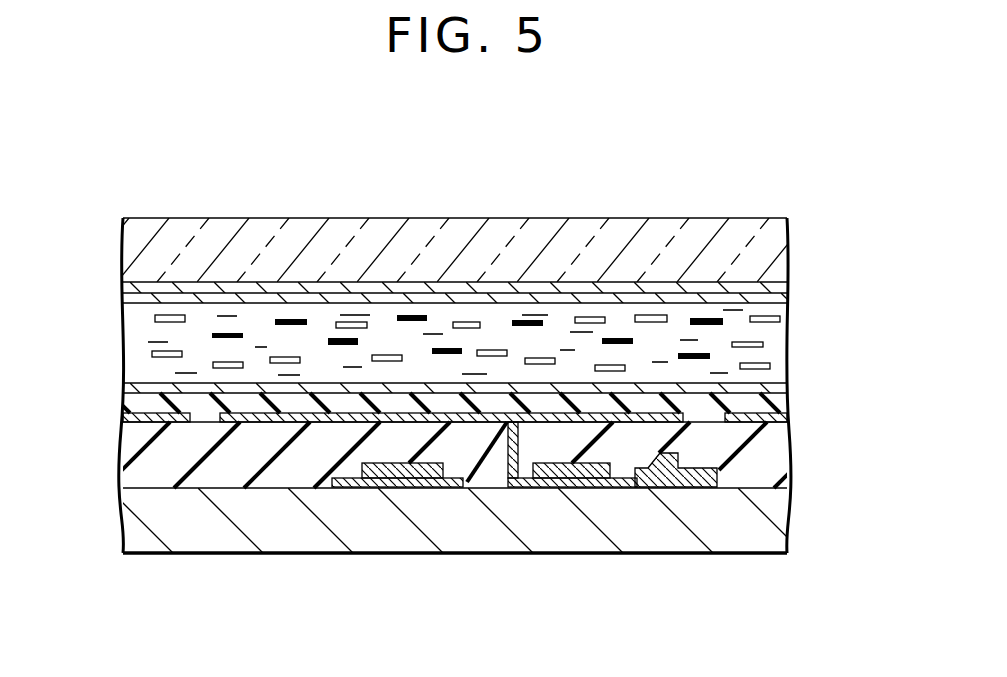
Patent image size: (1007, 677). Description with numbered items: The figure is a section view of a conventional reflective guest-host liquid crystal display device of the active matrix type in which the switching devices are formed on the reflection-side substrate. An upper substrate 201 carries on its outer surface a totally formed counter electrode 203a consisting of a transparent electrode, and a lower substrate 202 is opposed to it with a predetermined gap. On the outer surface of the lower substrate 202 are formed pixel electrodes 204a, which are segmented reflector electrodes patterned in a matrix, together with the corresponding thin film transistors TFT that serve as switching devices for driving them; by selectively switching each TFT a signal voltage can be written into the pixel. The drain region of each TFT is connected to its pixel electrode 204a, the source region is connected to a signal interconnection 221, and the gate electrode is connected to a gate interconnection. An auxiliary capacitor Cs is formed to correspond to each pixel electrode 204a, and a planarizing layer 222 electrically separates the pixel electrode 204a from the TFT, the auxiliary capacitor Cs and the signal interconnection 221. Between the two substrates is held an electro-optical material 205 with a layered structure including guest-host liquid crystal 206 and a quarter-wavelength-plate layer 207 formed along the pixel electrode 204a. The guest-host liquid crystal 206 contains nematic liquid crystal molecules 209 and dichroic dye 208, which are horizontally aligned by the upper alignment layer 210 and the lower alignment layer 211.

The upper substrate 201 is at (743, 250).
The counter electrode 203a is at (782, 288).
The upper alignment layer 210 is at (782, 297).
The electro-optical material 205 is at (461, 280).
The guest-host liquid crystal 206 is at (767, 333).
The dichroic dye 208 is at (410, 317).
The nematic liquid crystal molecules 209 is at (466, 323).
The lower alignment layer 211 is at (782, 390).
The quarter-wavelength-plate layer 207 is at (770, 403).
The pixel electrode 204a is at (300, 417).
The planarizing layer 222 is at (765, 458).
The lower substrate 202 is at (755, 515).
The auxiliary capacitor Cs is at (402, 496).
The thin film transistor TFT is at (612, 519).
The signal interconnection 221 is at (693, 477).